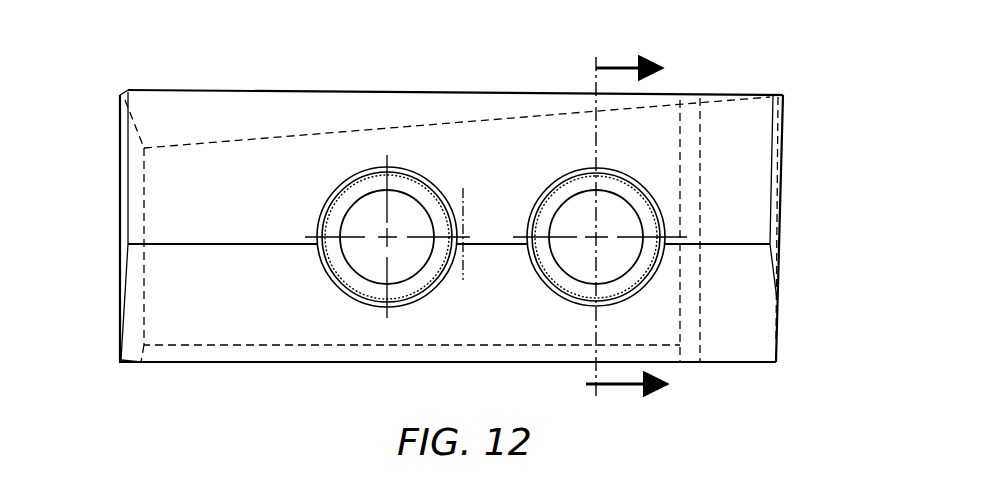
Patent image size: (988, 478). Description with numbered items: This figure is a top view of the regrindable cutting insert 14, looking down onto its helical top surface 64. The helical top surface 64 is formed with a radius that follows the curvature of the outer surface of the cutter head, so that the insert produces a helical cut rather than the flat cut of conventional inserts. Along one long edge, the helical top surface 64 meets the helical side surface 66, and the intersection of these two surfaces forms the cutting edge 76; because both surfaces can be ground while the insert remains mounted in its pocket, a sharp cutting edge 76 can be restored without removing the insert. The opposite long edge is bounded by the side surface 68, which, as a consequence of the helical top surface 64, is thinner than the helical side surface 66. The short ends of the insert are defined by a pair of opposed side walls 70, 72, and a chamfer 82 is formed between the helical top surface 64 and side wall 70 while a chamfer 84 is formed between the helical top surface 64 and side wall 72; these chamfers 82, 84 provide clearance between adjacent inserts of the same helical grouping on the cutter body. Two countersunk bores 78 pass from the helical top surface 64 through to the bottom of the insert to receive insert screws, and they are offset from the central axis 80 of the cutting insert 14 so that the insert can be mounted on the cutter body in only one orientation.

The cutting insert 14 is at (192, 48).
The helical top surface 64 is at (211, 183).
The helical side surface 66 is at (463, 90).
The side surface 68 is at (378, 368).
The side wall 70 is at (108, 215).
The side wall 72 is at (788, 172).
The cutting edge 76 is at (363, 92).
The countersunk bores 78 is at (348, 230).
The central axis 80 is at (464, 241).
The chamfer 82 is at (122, 157).
The chamfer 84 is at (783, 95).